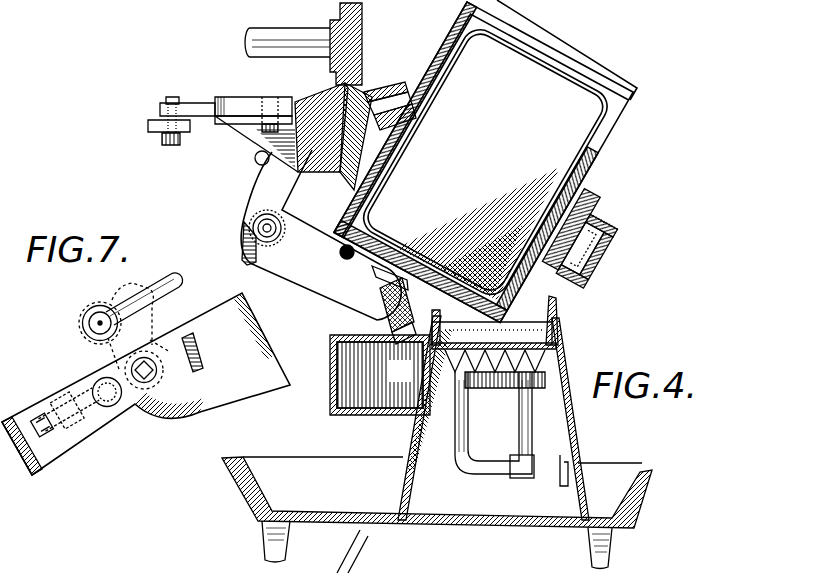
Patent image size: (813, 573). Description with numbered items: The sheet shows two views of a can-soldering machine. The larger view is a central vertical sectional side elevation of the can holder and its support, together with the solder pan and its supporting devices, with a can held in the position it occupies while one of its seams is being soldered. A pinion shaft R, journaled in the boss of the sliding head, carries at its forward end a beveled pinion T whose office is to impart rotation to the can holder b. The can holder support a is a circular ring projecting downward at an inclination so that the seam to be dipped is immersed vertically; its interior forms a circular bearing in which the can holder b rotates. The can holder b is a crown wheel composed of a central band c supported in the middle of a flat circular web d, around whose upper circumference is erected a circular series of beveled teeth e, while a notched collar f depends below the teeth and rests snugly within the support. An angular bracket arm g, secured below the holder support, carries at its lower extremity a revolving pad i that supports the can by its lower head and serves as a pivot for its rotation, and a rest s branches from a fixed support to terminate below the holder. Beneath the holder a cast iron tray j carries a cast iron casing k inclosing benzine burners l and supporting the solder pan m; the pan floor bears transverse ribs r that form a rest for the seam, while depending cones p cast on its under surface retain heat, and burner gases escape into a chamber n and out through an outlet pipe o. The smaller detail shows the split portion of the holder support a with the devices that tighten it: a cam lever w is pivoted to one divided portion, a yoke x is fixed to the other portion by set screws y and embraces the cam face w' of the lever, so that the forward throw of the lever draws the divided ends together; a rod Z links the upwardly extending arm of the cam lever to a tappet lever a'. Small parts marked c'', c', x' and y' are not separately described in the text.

In FIG. 4, the pinion shaft R is at (289, 53).
In FIG. 4, the beveled pinion T is at (362, 25).
In FIG. 4, the can holder b is at (334, 88).
In FIG. 4, the flat circular web d is at (383, 92).
In FIG. 4, the central band c is at (508, 183).
In FIG. 4, the beveled teeth e is at (397, 105).
In FIG. 4, the notched collar f is at (616, 272).
In FIG. 4, the can holder support a is at (582, 251).
In FIG. 7, the can holder support a is at (146, 384).
In FIG. 4, the rod Z is at (190, 106).
In FIG. 7, the rod Z is at (176, 291).
In FIG. 4, the nut c'' is at (157, 111).
In FIG. 4, the nut c' is at (158, 140).
In FIG. 4, the tappet lever a' is at (177, 132).
In FIG. 4, the angular bracket arm g is at (276, 200).
In FIG. 4, the casing k is at (246, 248).
In FIG. 4, the rest s is at (338, 259).
In FIG. 4, the revolving pad i is at (376, 309).
In FIG. 4, the solder pan m is at (541, 333).
In FIG. 4, the transverse ribs r is at (540, 343).
In FIG. 4, the depending cones p is at (513, 383).
In FIG. 4, the chamber n is at (494, 428).
In FIG. 4, the benzine burners l is at (513, 468).
In FIG. 4, the outlet pipe o is at (402, 380).
In FIG. 4, the tray j is at (276, 490).
In FIG. 7, the cam lever w is at (124, 327).
In FIG. 7, the cam face w' is at (199, 345).
In FIG. 7, the yoke x is at (172, 370).
In FIG. 7, the nut x' is at (67, 406).
In FIG. 7, the set screws y is at (80, 405).
In FIG. 7, the bolt head y' is at (33, 426).